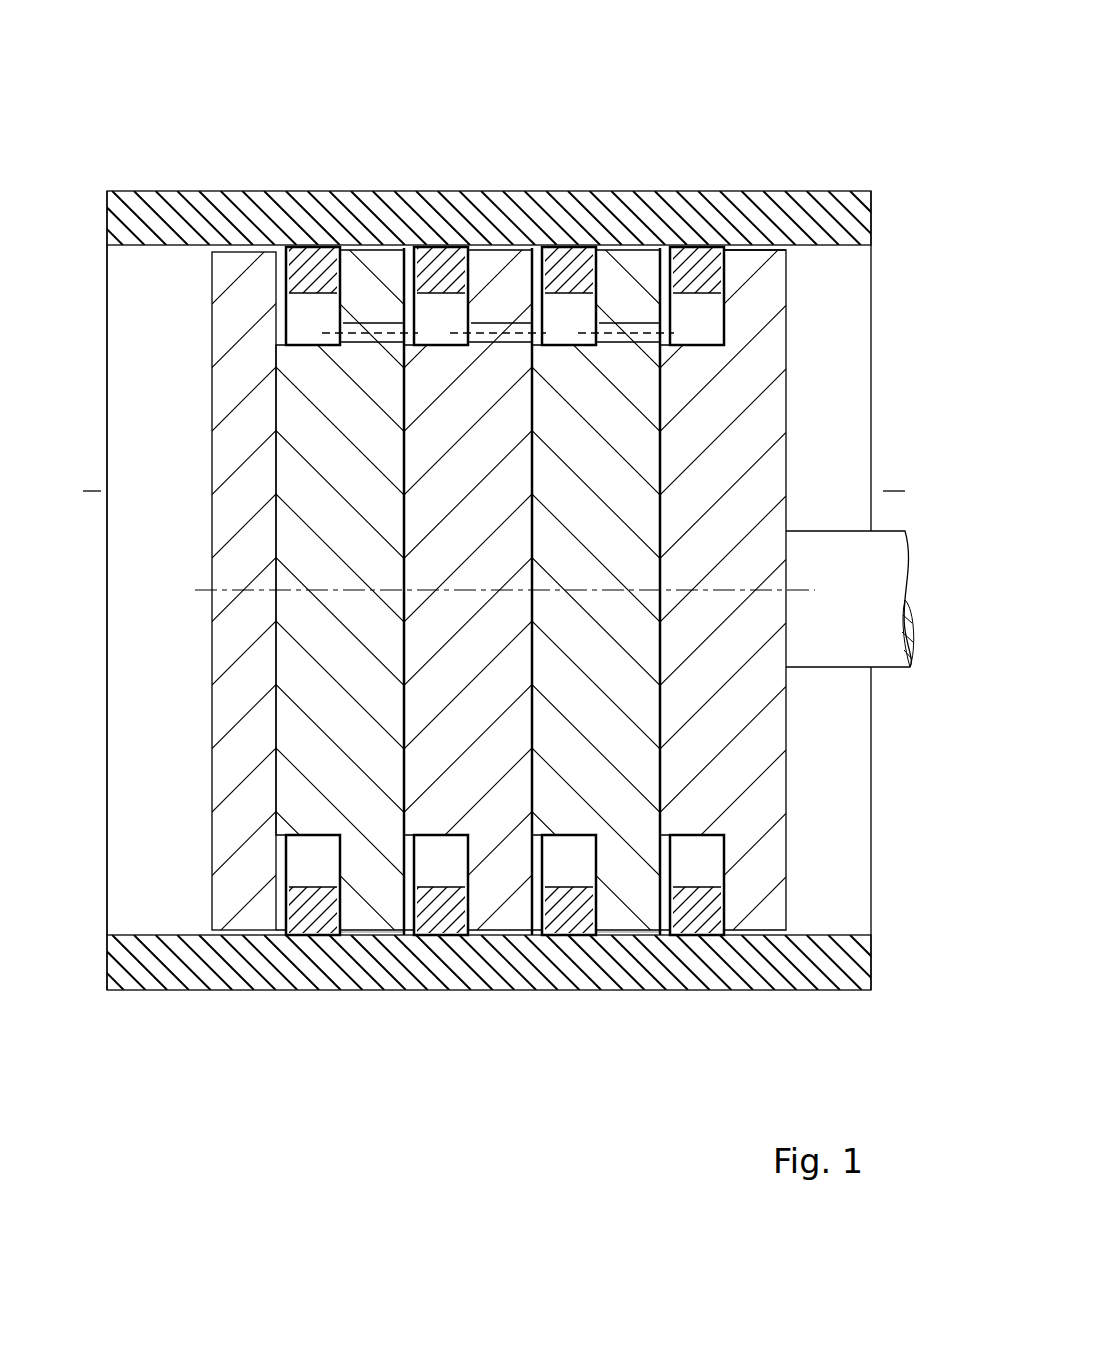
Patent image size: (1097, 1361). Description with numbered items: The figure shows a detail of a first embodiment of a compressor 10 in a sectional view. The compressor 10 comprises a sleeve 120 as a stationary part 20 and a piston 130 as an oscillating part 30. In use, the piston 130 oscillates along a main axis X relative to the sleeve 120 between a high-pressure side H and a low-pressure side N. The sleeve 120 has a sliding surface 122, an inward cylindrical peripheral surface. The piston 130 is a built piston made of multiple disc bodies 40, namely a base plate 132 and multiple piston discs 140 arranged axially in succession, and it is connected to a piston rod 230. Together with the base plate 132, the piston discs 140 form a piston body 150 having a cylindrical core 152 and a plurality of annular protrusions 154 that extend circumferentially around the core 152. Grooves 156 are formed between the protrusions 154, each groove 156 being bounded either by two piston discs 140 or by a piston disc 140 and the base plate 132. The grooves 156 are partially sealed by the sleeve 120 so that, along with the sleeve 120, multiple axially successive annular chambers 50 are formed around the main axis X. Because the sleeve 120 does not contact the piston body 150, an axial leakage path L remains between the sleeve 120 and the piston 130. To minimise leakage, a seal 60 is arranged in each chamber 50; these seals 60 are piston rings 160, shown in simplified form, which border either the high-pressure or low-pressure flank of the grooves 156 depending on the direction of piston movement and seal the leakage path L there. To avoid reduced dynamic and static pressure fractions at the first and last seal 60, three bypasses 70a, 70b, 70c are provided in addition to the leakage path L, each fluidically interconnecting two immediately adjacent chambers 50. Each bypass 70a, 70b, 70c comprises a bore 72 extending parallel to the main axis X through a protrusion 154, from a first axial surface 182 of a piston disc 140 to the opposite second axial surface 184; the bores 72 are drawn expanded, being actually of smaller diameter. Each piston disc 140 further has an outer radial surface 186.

The compressor 10 is at (840, 40).
The stationary part 20 is at (487, 527).
The sleeve 120 is at (487, 527).
The oscillating part 30 is at (163, 499).
The piston 130 is at (163, 258).
The sliding surface 122 is at (175, 215).
The base plate 132 is at (225, 757).
The disc bodies 40 is at (564, 539).
The piston discs 140 is at (564, 539).
The chambers 50 is at (282, 905).
The seal 60 is at (479, 999).
The piston rings 160 is at (304, 918).
The bypass 70a is at (377, 315).
The bypass 70b is at (503, 310).
The bypass 70c is at (632, 312).
The bore 72 is at (362, 330).
The piston body 150 is at (722, 647).
The cylindrical core 152 is at (680, 238).
The annular protrusions 154 is at (243, 288).
The grooves 156 is at (280, 853).
The first axial surface 182 is at (490, 245).
The second axial surface 184 is at (567, 263).
The outer radial surface 186 is at (750, 262).
The piston rod 230 is at (886, 615).
The main axis X is at (257, 590).
The high-pressure side H is at (93, 477).
The low-pressure side N is at (894, 477).
The leakage path L is at (350, 937).